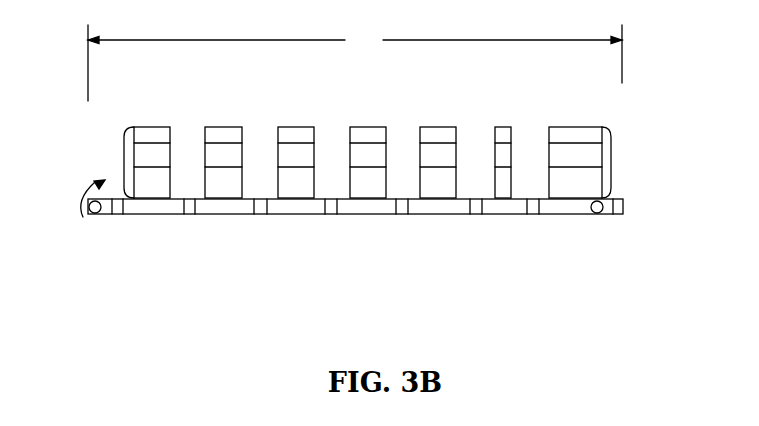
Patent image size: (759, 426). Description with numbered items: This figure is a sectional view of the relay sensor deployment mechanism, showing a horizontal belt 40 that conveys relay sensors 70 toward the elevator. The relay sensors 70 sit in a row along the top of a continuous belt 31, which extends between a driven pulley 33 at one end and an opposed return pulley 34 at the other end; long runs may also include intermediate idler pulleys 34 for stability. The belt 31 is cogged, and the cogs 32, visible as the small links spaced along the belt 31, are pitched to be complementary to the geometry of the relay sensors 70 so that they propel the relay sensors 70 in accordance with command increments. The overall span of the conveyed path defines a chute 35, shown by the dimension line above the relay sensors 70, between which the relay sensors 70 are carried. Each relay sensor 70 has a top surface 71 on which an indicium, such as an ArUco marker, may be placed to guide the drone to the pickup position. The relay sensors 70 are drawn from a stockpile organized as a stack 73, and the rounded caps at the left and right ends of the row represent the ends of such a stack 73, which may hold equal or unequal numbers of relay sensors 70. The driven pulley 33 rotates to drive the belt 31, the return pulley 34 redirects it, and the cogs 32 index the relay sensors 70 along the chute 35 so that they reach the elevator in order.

The continuous belt 31 is at (208, 205).
The cog 32 is at (332, 206).
The driven pulley 33 is at (95, 214).
The return pulley 34 is at (620, 214).
The chute 35 is at (355, 63).
The belt 40 is at (477, 135).
The relay sensor 70 is at (153, 135).
The top surface 71 is at (575, 135).
The stack 73 is at (123, 163).